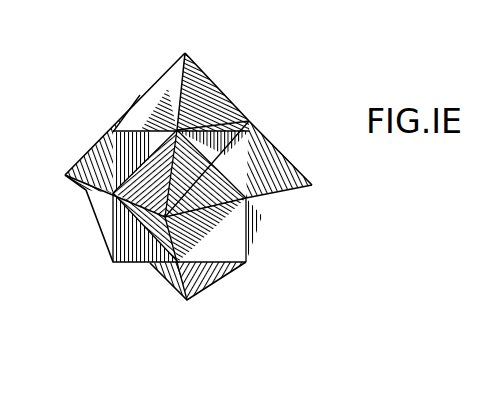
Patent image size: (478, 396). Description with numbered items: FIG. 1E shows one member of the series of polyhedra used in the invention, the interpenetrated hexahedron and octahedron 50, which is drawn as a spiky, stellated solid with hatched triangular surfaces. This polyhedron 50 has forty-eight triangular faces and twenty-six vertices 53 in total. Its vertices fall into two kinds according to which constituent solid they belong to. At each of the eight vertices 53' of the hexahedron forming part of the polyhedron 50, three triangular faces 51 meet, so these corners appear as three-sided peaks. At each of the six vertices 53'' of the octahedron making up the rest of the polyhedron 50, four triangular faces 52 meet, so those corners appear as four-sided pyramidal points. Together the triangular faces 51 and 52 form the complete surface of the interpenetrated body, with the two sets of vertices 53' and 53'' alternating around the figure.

The interpenetrated hexahedron and octahedron 50 is at (260, 55).
The triangular faces 51 is at (226, 110).
The triangular faces 52 is at (152, 132).
The vertices 53 is at (179, 171).
The vertices of the hexahedron 53' is at (217, 224).
The vertices of the octahedron 53'' is at (261, 229).